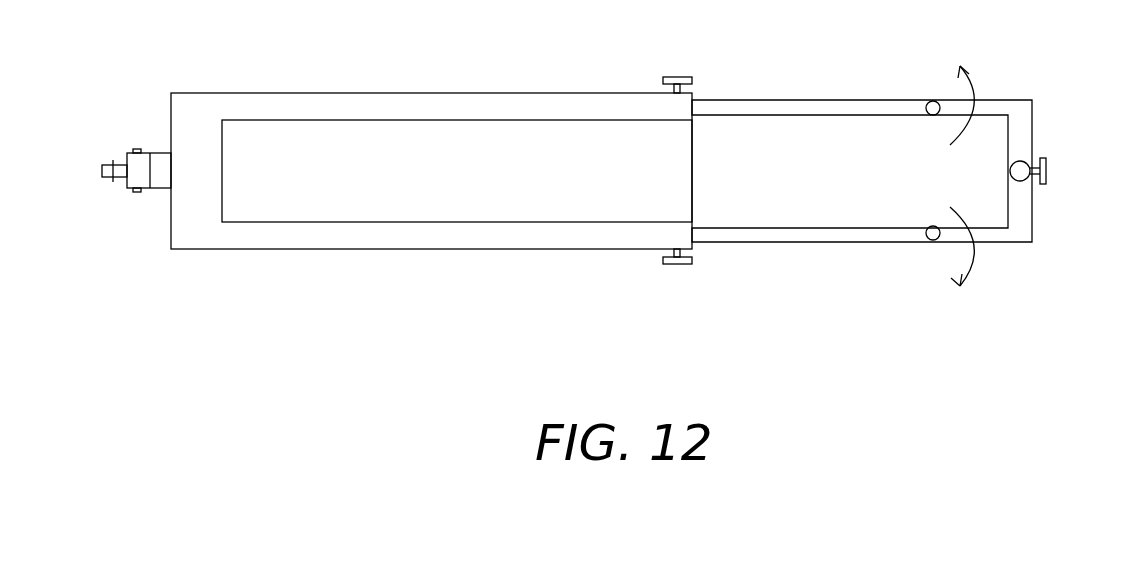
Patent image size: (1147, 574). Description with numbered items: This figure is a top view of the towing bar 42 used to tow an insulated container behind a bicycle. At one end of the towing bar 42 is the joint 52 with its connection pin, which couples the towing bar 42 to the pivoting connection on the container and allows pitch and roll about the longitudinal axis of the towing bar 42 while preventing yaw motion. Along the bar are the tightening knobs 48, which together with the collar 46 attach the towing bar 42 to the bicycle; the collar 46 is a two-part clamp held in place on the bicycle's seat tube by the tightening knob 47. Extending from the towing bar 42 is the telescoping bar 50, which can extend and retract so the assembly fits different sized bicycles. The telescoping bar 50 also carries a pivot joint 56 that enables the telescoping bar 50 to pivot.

The towing bar 42 is at (394, 249).
The collar 46 is at (1030, 165).
The tightening knob 47 is at (1046, 175).
The knobs 48 is at (673, 77).
The telescoping bar 50 is at (760, 107).
The joint 52 is at (138, 150).
The pivot joint 56 is at (931, 240).